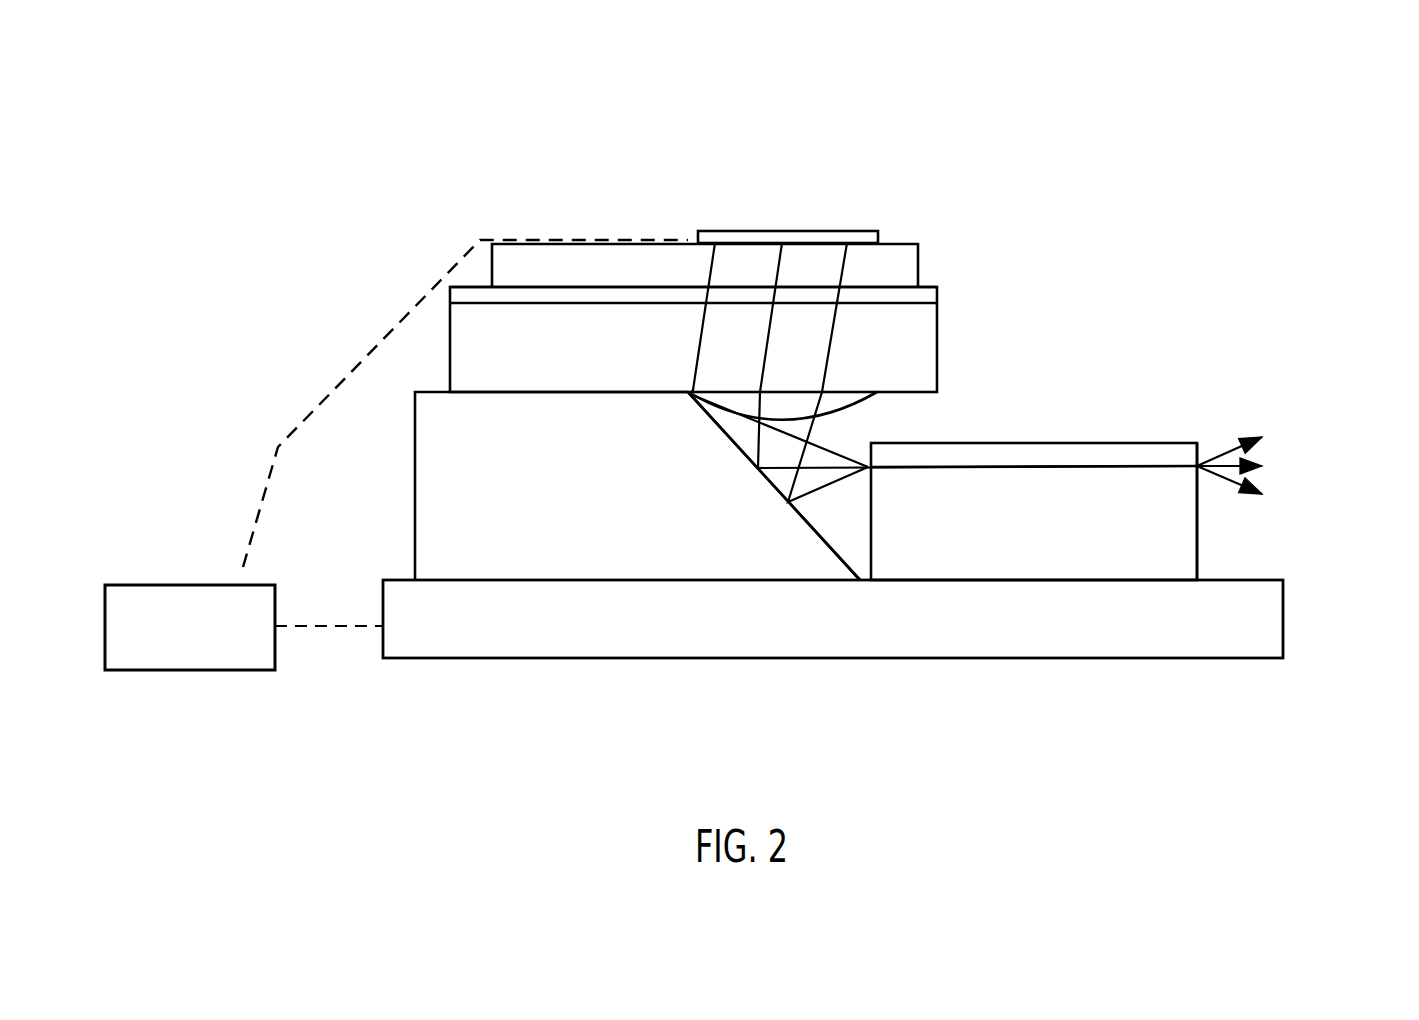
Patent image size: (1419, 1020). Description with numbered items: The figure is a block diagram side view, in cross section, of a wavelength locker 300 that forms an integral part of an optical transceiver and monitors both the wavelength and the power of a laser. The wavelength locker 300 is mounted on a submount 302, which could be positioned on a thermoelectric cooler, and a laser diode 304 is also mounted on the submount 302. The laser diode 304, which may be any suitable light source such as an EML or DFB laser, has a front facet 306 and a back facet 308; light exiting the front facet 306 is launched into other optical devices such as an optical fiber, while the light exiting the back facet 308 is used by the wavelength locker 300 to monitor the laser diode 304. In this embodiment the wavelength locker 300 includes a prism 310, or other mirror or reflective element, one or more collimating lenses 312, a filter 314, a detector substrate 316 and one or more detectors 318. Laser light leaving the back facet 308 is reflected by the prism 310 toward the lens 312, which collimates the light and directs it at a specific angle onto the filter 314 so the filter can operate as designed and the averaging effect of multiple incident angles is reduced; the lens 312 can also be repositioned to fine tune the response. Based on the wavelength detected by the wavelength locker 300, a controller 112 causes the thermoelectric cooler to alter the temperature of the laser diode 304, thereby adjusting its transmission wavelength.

The controller 112 is at (190, 670).
The wavelength locker 300 is at (474, 137).
The submount 302 is at (1260, 616).
The laser diode 304 is at (1127, 442).
The front facet 306 is at (1200, 553).
The back facet 308 is at (870, 535).
The prism 310 is at (810, 525).
The collimating lens 312 is at (915, 360).
The filter 314 is at (469, 280).
The detector substrate 316 is at (925, 258).
The detector 318 is at (903, 222).